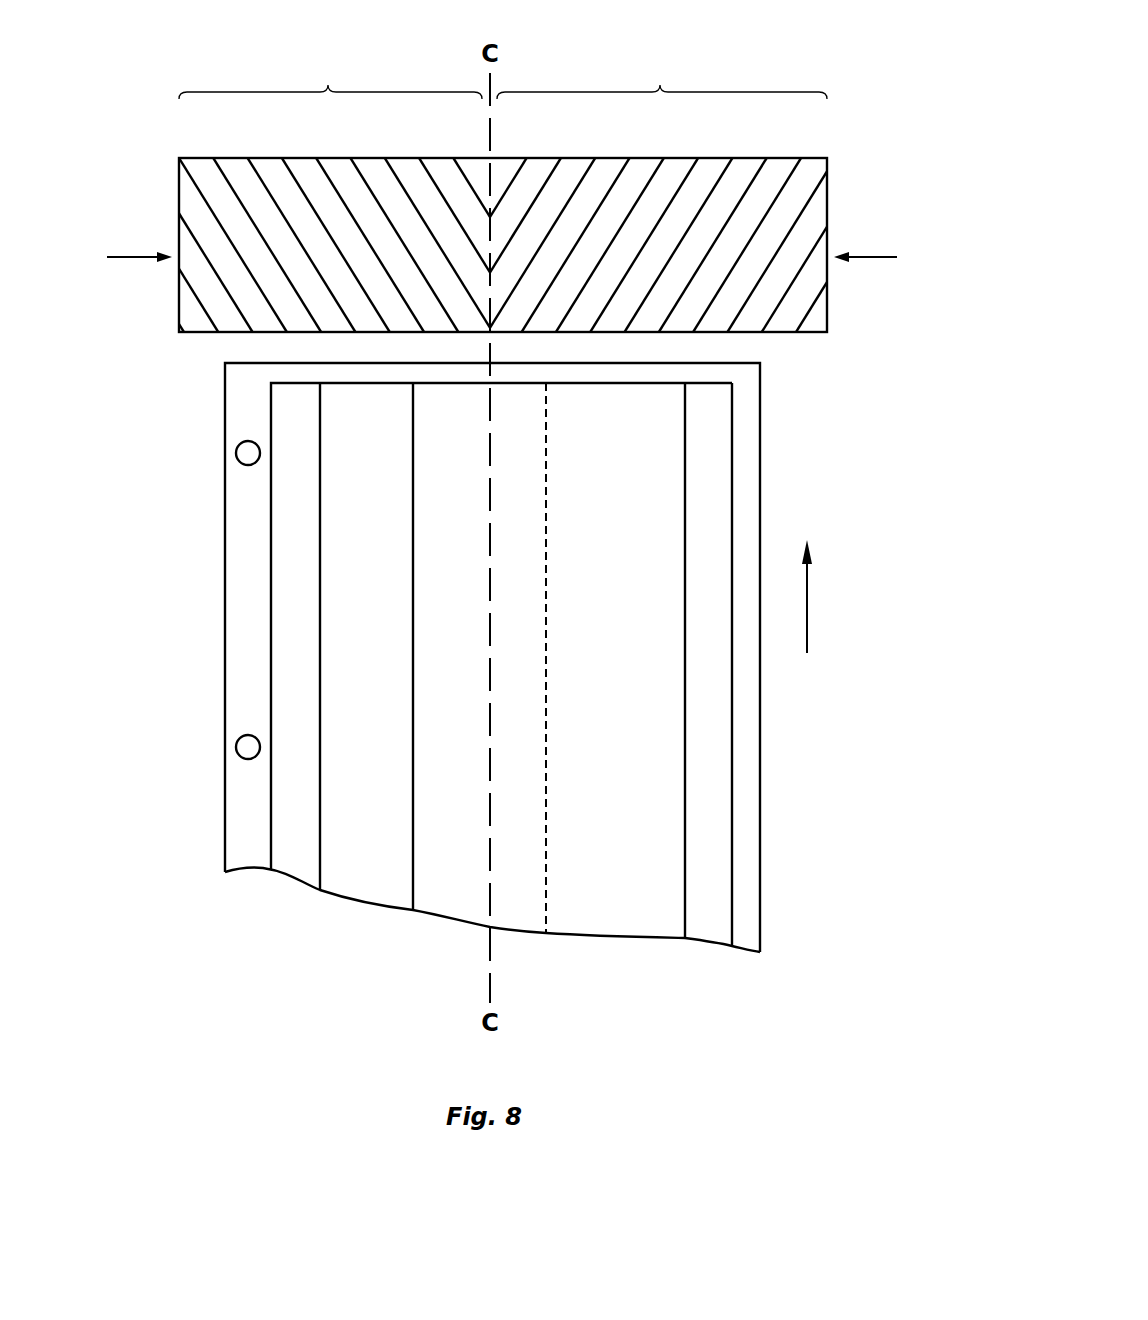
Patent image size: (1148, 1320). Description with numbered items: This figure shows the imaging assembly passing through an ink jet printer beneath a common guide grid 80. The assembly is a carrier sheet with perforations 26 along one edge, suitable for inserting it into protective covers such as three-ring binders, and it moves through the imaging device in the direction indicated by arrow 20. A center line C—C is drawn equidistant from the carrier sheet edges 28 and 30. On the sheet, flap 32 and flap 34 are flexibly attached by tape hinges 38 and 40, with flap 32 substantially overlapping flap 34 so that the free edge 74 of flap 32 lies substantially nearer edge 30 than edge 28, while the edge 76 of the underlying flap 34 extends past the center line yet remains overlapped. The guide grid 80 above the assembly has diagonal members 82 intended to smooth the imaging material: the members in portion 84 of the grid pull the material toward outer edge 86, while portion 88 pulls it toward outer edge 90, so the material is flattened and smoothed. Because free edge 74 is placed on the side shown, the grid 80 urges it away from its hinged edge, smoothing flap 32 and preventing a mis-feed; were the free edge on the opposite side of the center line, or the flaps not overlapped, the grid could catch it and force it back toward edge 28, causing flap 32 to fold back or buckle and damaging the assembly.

The arrow 20 is at (808, 651).
The perforations 26 is at (238, 444).
The edge 28 is at (768, 752).
The edge 30 is at (222, 637).
The flap 32 is at (600, 693).
The flap 34 is at (354, 693).
The tape hinge 38 is at (284, 693).
The tape hinge 40 is at (695, 693).
The free edge 74 is at (413, 767).
The edge 76 is at (547, 763).
The guide grid 80 is at (613, 158).
The diagonal members 82 is at (383, 207).
The portion 84 is at (330, 77).
The outer edge 86 is at (121, 258).
The portion 88 is at (662, 77).
The outer edge 90 is at (885, 258).